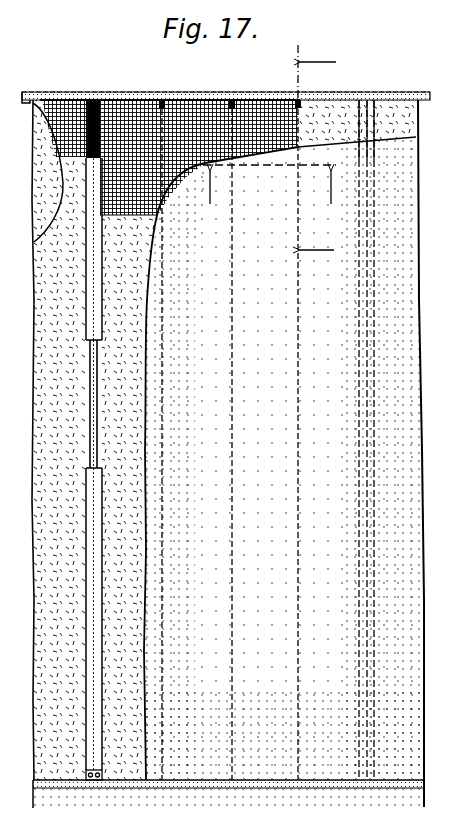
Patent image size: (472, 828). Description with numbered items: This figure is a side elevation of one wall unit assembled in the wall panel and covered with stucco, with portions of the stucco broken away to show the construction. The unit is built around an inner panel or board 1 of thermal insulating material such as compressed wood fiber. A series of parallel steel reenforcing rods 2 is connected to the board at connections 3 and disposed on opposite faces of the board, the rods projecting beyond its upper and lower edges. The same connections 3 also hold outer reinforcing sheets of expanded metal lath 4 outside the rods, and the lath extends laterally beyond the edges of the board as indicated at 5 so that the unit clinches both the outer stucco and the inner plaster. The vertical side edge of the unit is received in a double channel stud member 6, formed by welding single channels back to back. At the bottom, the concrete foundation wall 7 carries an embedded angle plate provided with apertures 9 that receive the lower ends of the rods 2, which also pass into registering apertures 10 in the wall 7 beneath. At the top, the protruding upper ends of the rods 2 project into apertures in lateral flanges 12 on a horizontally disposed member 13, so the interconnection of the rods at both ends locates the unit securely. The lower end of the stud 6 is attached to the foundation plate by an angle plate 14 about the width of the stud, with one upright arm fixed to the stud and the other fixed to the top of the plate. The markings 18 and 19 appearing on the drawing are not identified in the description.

The inner panel or board 1 is at (38, 212).
The steel reenforcing rods 2 is at (300, 143).
The connections 3 is at (234, 104).
The expanded metal lath 4 is at (190, 112).
The laterally extending lath portion 5 is at (95, 100).
The double channel stud member 6 is at (87, 571).
The concrete foundation wall 7 is at (40, 807).
The apertures 9 is at (163, 783).
The apertures in the wall 10 is at (36, 224).
The lateral flanges 12 is at (30, 97).
The horizontally disposed member 13 is at (58, 92).
The angle plate 14 is at (95, 790).
The section line 18 is at (266, 196).
The section line 19 is at (317, 160).